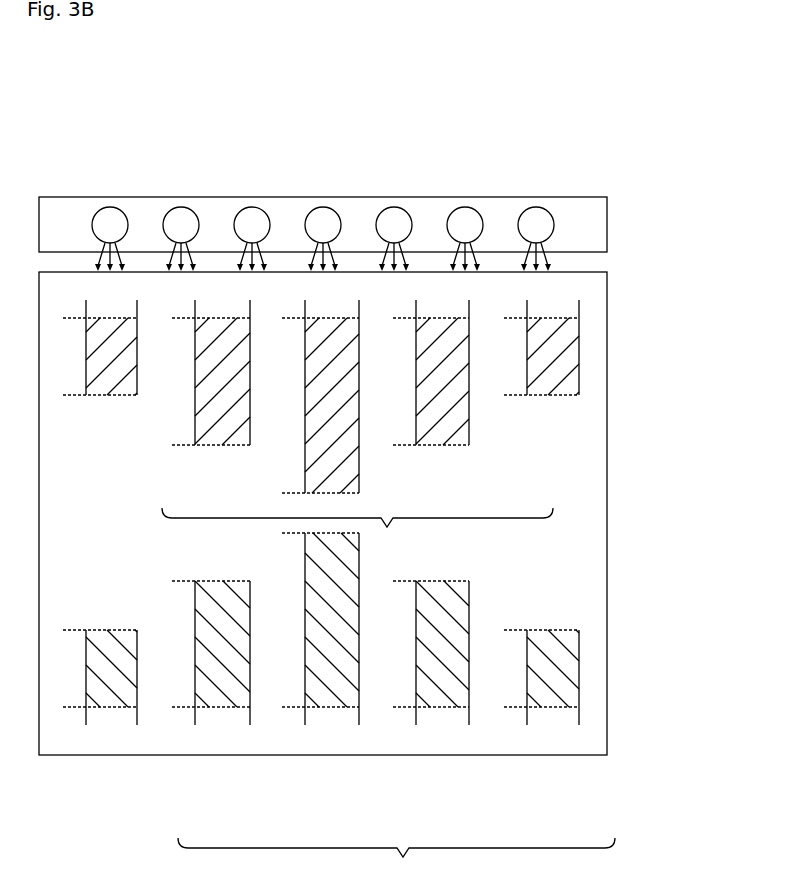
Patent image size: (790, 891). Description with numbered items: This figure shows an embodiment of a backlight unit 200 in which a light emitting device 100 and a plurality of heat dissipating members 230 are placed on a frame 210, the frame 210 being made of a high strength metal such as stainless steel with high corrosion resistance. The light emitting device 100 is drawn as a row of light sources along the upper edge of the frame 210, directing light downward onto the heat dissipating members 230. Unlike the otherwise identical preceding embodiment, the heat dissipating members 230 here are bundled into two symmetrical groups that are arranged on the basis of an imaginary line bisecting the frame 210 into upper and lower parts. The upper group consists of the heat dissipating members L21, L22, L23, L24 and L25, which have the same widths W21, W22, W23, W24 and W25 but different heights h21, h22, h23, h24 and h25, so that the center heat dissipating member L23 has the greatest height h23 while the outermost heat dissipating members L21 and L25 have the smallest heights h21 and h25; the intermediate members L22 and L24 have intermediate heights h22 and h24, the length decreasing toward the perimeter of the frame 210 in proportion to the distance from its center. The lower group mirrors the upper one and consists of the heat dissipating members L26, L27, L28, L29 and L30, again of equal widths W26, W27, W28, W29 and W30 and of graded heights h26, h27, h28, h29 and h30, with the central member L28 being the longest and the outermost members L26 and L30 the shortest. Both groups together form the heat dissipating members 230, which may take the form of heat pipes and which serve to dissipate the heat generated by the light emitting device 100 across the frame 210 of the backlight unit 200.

The light emitting device 100 is at (323, 207).
The backlight unit 200 is at (440, 170).
The frame 210 is at (597, 372).
The heat dissipating members 230 is at (388, 697).
The heat dissipating member L21 is at (113, 395).
The heat dissipating member L22 is at (225, 445).
The center heat dissipating member L23 is at (360, 445).
The heat dissipating member L24 is at (442, 445).
The heat dissipating member L25 is at (553, 395).
The sixth phosphor line L26 is at (115, 707).
The seventh phosphor line L27 is at (224, 707).
The eighth phosphor line L28 is at (334, 707).
The ninth phosphor line L29 is at (444, 707).
The tenth phosphor line L30 is at (556, 707).
The width W21 is at (137, 307).
The width W22 is at (250, 307).
The width W23 is at (305, 307).
The width W24 is at (469, 307).
The width W25 is at (527, 307).
The width of line L26 W26 is at (137, 720).
The width of line L27 W27 is at (250, 720).
The width of line L28 W28 is at (305, 720).
The width of line L29 W29 is at (469, 720).
The width of line L30 W30 is at (527, 720).
The height of line L21 h21 is at (73, 318).
The height of line L22 h22 is at (182, 318).
The height of line L23 h23 is at (292, 318).
The height of line L24 h24 is at (403, 318).
The height of line L25 h25 is at (514, 318).
The height of line L26 h26 is at (73, 630).
The height of line L27 h27 is at (182, 581).
The height of line L28 h28 is at (292, 533).
The height of line L29 h29 is at (403, 581).
The height of line L30 h30 is at (514, 630).